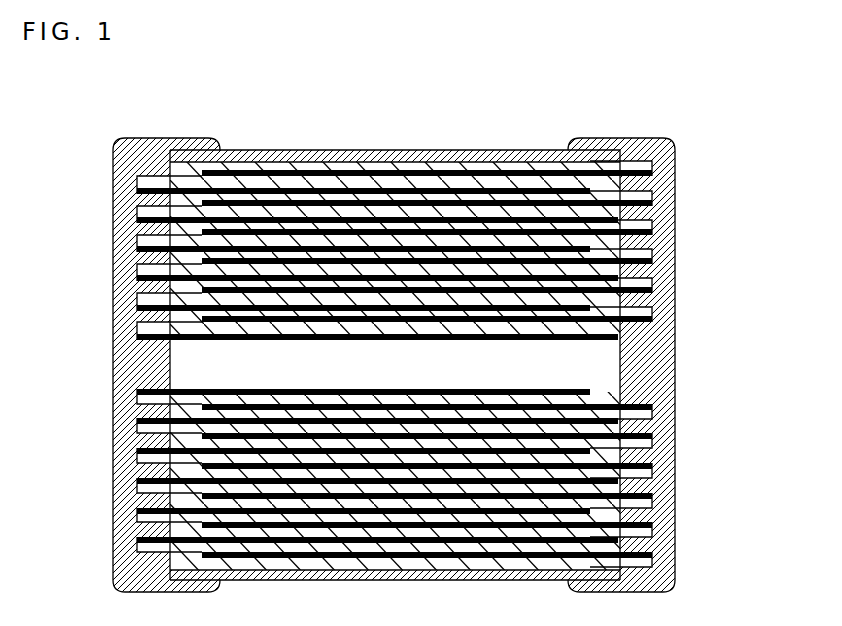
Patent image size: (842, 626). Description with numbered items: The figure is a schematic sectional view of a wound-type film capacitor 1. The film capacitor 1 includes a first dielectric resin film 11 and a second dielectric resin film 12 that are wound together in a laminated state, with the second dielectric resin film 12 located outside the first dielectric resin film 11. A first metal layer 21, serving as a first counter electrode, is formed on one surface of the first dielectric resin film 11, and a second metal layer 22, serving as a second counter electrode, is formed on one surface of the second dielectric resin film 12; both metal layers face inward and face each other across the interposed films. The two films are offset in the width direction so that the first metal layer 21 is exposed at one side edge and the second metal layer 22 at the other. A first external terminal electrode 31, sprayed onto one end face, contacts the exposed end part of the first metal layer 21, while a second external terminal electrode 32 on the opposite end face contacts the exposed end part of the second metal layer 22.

The film capacitor 1 is at (92, 118).
The first dielectric resin film 11 is at (287, 180).
The second dielectric resin film 12 is at (483, 170).
The first metal layer 21 is at (215, 188).
The second metal layer 22 is at (548, 188).
The first external terminal electrode 31 is at (115, 212).
The second external terminal electrode 32 is at (660, 209).